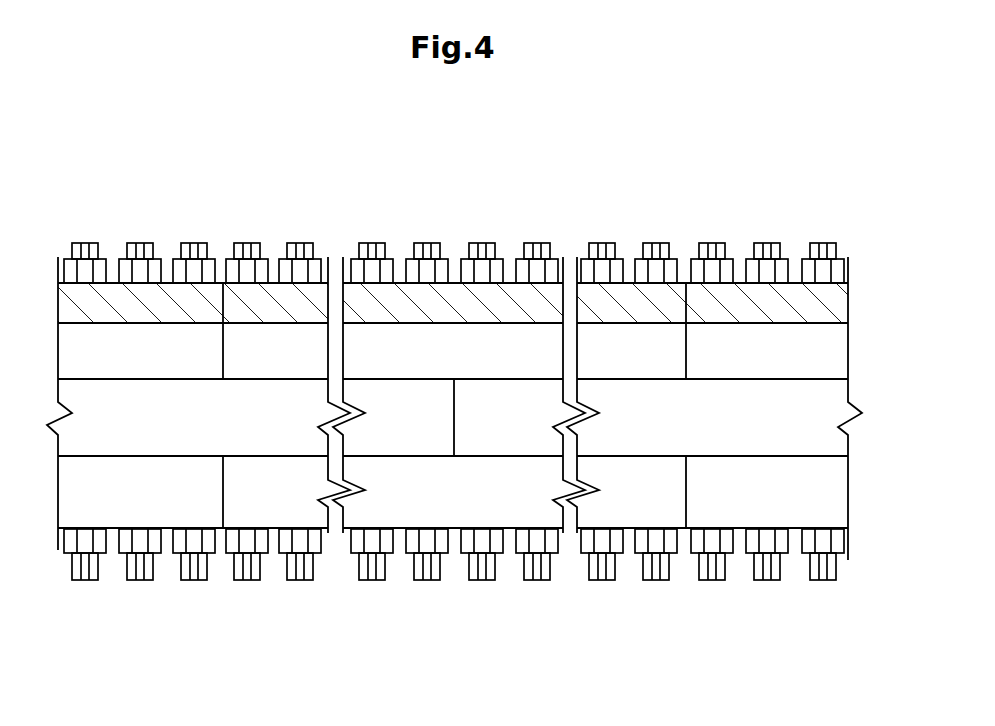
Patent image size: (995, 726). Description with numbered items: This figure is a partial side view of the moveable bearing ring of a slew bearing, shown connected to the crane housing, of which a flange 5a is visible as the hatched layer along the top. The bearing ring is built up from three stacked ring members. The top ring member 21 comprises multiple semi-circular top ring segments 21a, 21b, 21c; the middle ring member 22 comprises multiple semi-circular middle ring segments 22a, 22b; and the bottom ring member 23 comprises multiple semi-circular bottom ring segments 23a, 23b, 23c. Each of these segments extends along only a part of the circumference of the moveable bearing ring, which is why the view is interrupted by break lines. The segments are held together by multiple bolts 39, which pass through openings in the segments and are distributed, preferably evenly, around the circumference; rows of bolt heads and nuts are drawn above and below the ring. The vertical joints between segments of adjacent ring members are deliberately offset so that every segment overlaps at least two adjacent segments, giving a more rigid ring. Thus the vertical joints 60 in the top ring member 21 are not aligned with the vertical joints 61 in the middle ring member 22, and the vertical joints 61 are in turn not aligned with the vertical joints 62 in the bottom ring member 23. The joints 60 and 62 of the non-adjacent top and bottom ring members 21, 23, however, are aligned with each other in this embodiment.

The flange 5a is at (73, 302).
The top ring member 21 is at (468, 261).
The top ring segment 21a is at (160, 345).
The top ring segment 21b is at (449, 345).
The top ring segment 21c is at (737, 357).
The middle ring member 22 is at (469, 538).
The middle ring segment 22a is at (107, 427).
The middle ring segment 22b is at (635, 423).
The bottom ring member 23 is at (453, 579).
The bottom ring segment 23a is at (166, 496).
The bottom ring segment 23b is at (454, 490).
The bottom ring segment 23c is at (737, 497).
The bolt 39 is at (763, 243).
The vertical joint 60 is at (223, 353).
The vertical joint 61 is at (456, 420).
The vertical joint 62 is at (223, 490).